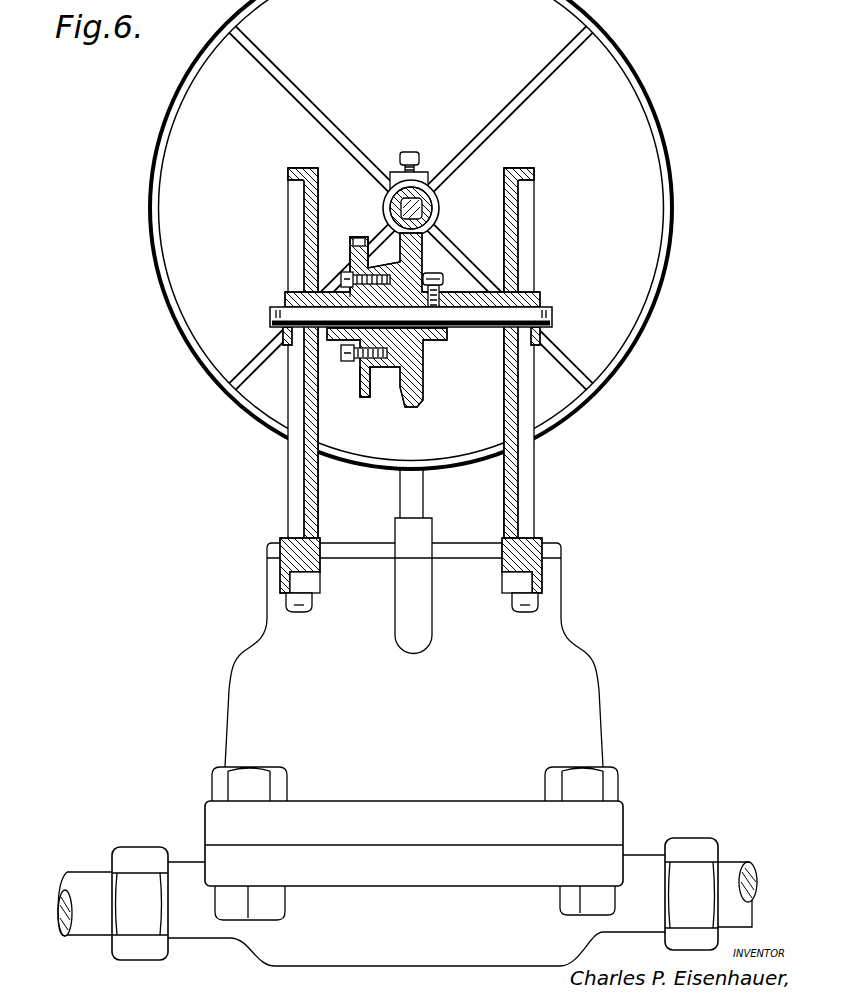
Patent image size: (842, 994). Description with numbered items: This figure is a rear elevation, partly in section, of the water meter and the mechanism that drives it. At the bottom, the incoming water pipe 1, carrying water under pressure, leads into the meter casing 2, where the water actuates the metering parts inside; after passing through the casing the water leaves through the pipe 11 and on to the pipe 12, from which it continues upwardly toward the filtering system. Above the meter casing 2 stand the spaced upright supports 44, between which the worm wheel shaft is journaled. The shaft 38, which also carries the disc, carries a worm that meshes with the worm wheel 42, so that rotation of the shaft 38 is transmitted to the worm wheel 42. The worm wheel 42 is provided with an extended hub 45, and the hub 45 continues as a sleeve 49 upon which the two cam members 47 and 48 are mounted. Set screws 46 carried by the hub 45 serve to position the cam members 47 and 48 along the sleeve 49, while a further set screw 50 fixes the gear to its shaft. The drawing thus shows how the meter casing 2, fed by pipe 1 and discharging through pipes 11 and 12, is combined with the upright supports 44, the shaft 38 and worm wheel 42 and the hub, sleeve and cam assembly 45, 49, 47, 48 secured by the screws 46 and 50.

The incoming water pipe 1 is at (752, 862).
The meter casing 2 is at (253, 690).
The pipe 11 is at (185, 872).
The pipe 12 is at (83, 880).
The shaft 38 is at (488, 327).
The worm wheel 42 is at (413, 393).
The spaced upright support 44 is at (522, 231).
The extended hub 45 is at (392, 360).
The set screws 46 is at (341, 279).
The cam member 47 is at (353, 238).
The cam member 48 is at (362, 238).
The sleeve 49 is at (332, 340).
The set screw 50 is at (434, 277).